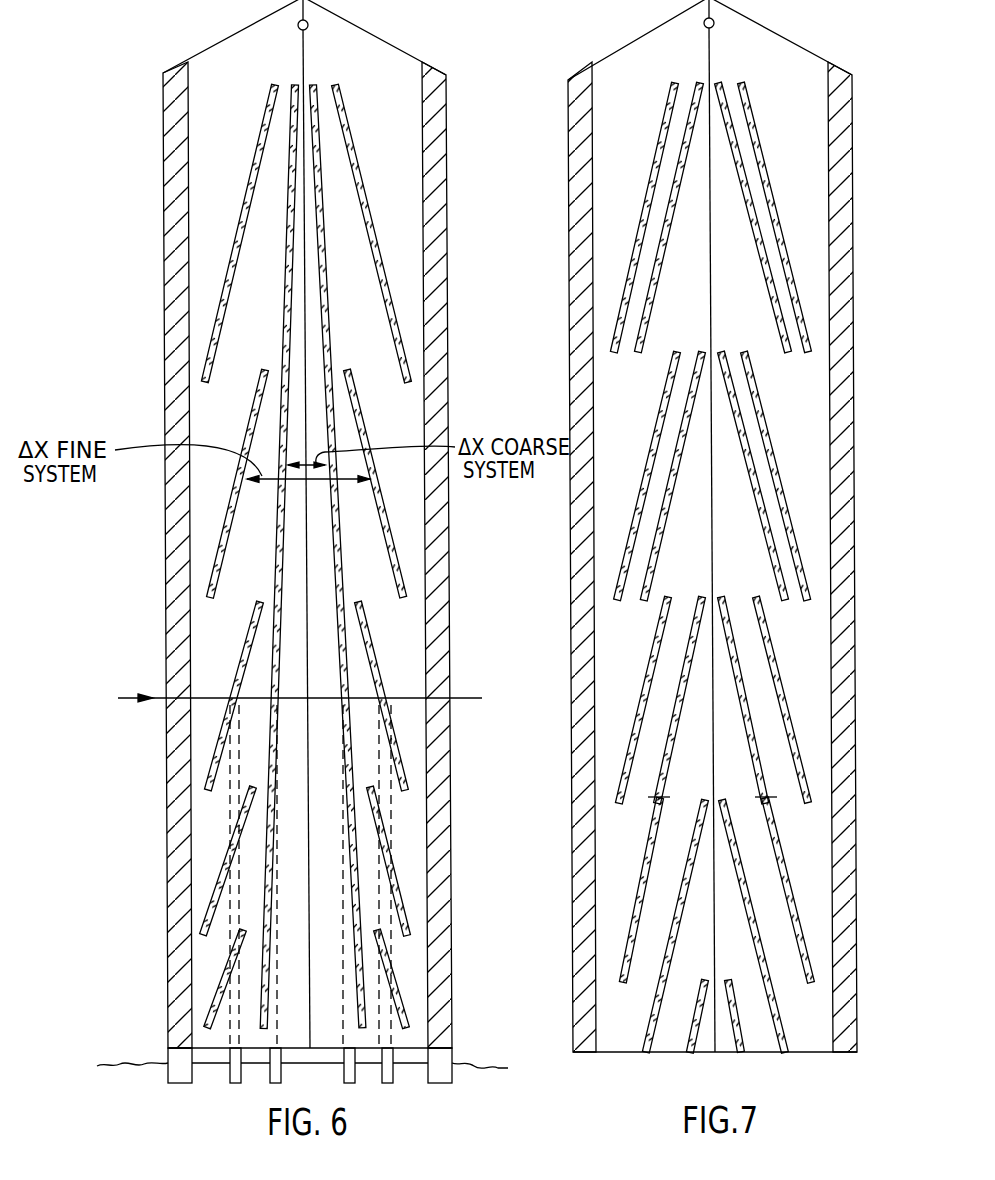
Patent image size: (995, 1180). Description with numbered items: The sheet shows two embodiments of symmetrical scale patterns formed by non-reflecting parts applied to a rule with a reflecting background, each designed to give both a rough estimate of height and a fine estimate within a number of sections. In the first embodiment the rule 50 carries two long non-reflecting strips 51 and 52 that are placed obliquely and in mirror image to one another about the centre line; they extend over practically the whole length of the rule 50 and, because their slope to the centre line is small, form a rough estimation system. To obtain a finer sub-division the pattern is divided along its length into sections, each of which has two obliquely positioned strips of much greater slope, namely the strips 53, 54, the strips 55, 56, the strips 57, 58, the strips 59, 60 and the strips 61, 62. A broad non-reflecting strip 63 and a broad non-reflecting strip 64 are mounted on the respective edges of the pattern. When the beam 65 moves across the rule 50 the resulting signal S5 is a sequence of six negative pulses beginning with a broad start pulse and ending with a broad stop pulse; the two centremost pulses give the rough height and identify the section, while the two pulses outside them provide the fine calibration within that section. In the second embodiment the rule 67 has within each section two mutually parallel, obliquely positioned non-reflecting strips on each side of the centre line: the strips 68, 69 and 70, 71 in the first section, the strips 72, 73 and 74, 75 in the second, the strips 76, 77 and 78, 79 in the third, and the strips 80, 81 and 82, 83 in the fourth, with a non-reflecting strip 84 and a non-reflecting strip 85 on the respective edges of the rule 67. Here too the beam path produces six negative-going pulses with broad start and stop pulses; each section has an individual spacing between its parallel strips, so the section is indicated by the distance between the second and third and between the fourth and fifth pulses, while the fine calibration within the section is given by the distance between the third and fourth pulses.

In FIG. 6, the rule 50 is at (309, 524).
In FIG. 6, the non-reflecting strip 51 is at (324, 266).
In FIG. 6, the non-reflecting strip 52 is at (285, 262).
In FIG. 6, the non-reflecting strip 53 is at (362, 173).
In FIG. 6, the non-reflecting strip 54 is at (258, 152).
In FIG. 6, the non-reflecting strip 55 is at (393, 545).
In FIG. 6, the non-reflecting strip 56 is at (226, 543).
In FIG. 6, the non-reflecting strip 57 is at (367, 632).
In FIG. 6, the non-reflecting strip 58 is at (248, 630).
In FIG. 6, the non-reflecting strip 59 is at (408, 832).
In FIG. 6, the non-reflecting strip 60 is at (233, 848).
In FIG. 6, the non-reflecting strip 61 is at (385, 968).
In FIG. 6, the non-reflecting strip 62 is at (228, 968).
In FIG. 6, the broad non-reflecting strip 63 is at (440, 746).
In FIG. 6, the broad non-reflecting strip 64 is at (178, 757).
In FIG. 6, the beam 65 is at (124, 698).
In FIG. 6, the signal S5 is at (146, 1063).
In FIG. 7, the rule 67 is at (716, 526).
In FIG. 7, the non-reflecting strip 68 is at (752, 132).
In FIG. 7, the non-reflecting strip 69 is at (760, 252).
In FIG. 7, the non-reflecting strip 70 is at (661, 124).
In FIG. 7, the non-reflecting strip 71 is at (661, 270).
In FIG. 7, the non-reflecting strip 72 is at (756, 392).
In FIG. 7, the non-reflecting strip 73 is at (746, 442).
In FIG. 7, the non-reflecting strip 74 is at (666, 387).
In FIG. 7, the non-reflecting strip 75 is at (682, 436).
In FIG. 7, the non-reflecting strip 76 is at (746, 638).
In FIG. 7, the non-reflecting strip 77 is at (746, 689).
In FIG. 7, the non-reflecting strip 78 is at (656, 632).
In FIG. 7, the non-reflecting strip 79 is at (684, 676).
In FIG. 7, the non-reflecting strip 80 is at (776, 832).
In FIG. 7, the non-reflecting strip 81 is at (736, 872).
In FIG. 7, the non-reflecting strip 82 is at (655, 832).
In FIG. 7, the non-reflecting strip 83 is at (690, 872).
In FIG. 7, the non-reflecting strip 84 is at (850, 831).
In FIG. 7, the non-reflecting strip 85 is at (578, 840).